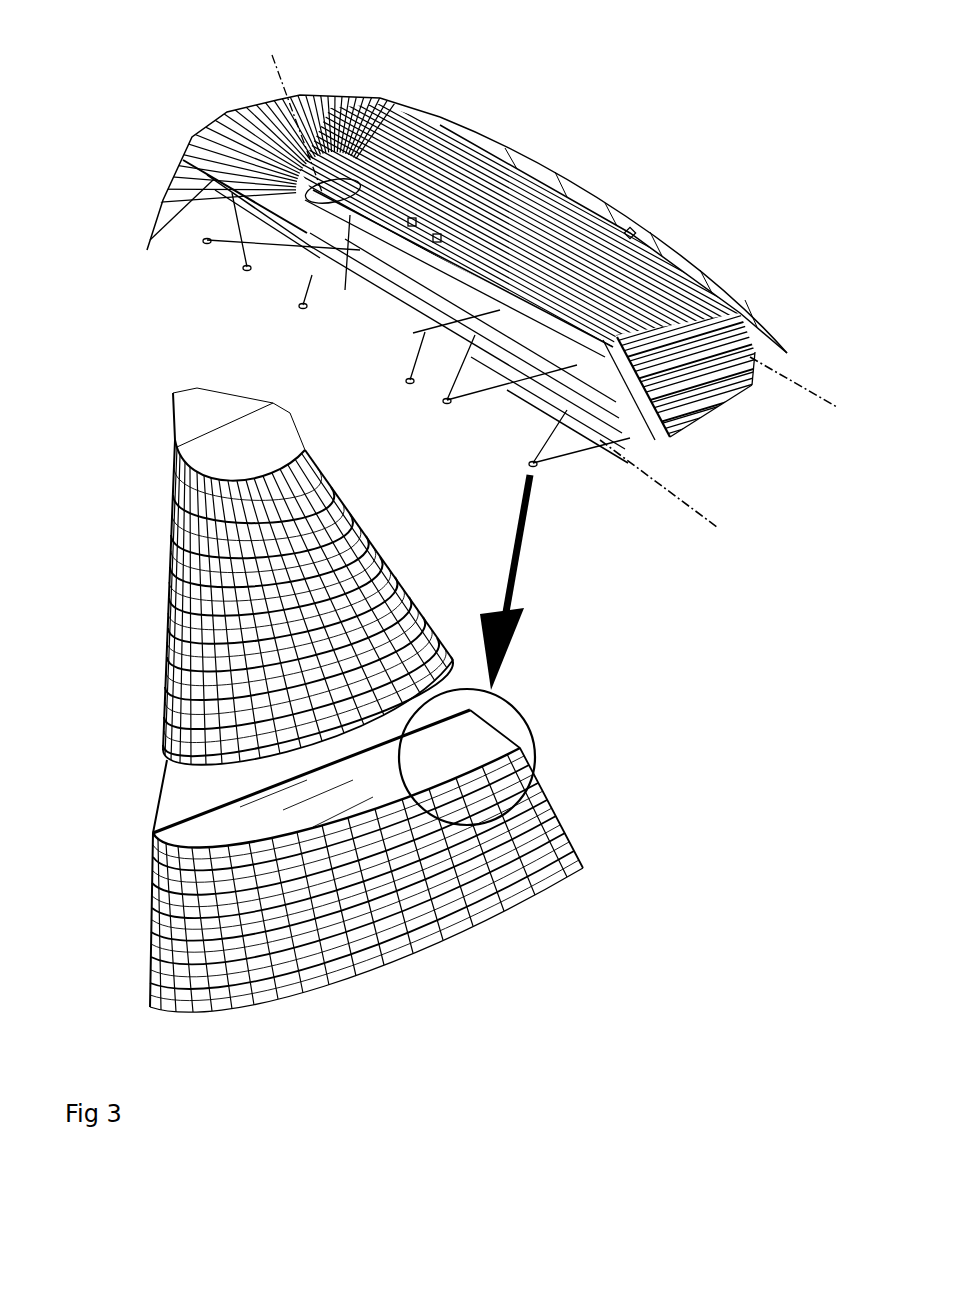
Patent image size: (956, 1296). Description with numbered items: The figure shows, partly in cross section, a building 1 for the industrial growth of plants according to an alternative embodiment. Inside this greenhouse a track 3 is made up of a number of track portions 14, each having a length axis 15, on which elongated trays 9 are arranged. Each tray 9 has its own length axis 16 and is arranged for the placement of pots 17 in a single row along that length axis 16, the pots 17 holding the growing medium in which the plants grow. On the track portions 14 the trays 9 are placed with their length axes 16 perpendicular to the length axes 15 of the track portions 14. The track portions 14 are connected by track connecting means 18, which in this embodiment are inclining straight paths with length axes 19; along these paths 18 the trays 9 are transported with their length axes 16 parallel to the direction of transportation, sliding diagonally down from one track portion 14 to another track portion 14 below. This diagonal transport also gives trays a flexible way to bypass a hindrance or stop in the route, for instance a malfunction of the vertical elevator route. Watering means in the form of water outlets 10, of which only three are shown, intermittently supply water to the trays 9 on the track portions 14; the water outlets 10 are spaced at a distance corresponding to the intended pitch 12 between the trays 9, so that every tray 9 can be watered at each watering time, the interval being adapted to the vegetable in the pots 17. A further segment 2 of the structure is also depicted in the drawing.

The building 1 is at (625, 809).
The upper tower segment 2 is at (397, 580).
The track 3 is at (584, 148).
The tray 9 is at (343, 107).
The water outlet 10 is at (438, 235).
The pitch 12 is at (632, 230).
The track portion 14 is at (690, 293).
The length axis of track portion 15 is at (803, 383).
The length axis of tray 16 is at (272, 66).
The pot 17 is at (368, 115).
The track connecting means 18 is at (583, 437).
The length axis of track connecting means 19 is at (700, 510).